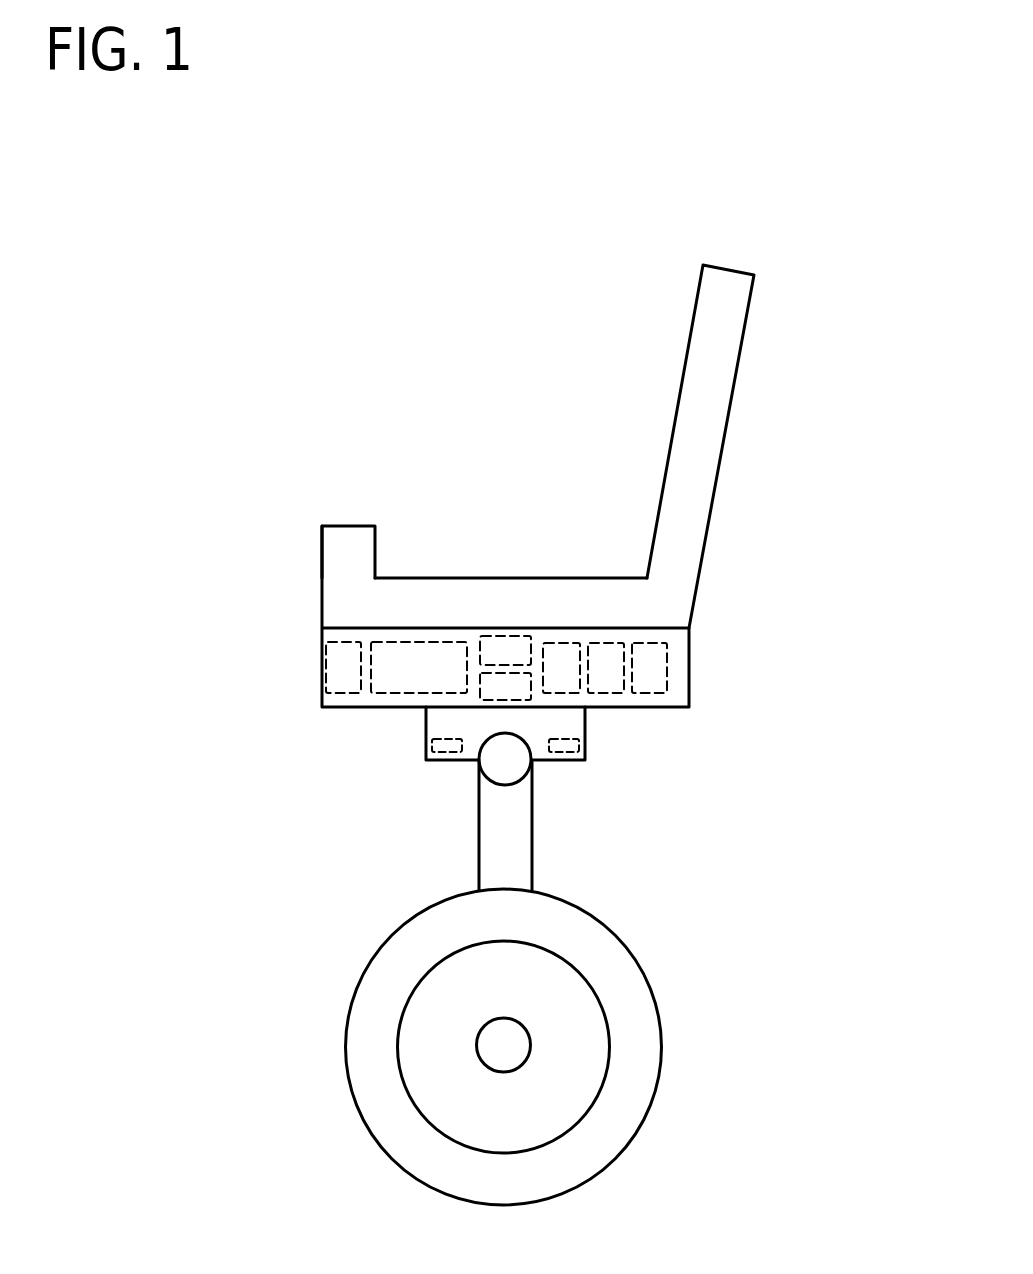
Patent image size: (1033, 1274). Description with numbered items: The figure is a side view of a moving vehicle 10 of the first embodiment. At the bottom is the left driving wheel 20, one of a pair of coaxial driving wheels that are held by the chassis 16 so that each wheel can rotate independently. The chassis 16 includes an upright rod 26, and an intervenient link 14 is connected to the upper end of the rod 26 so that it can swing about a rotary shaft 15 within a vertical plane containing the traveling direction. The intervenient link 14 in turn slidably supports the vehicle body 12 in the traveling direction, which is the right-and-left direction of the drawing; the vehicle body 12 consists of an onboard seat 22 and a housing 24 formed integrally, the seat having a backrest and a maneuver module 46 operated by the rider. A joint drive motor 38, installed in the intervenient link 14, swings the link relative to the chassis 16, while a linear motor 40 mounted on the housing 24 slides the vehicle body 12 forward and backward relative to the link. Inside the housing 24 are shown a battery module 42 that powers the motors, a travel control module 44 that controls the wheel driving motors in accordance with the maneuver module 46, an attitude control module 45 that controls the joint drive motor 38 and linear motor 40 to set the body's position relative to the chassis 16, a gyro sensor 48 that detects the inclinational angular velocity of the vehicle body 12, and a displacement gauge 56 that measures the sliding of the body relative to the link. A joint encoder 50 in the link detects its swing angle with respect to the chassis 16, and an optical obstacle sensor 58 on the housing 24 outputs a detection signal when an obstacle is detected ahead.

The moving vehicle 10 is at (523, 163).
The vehicle body 12 is at (773, 562).
The intervenient link 14 is at (585, 746).
The rotary shaft 15 is at (505, 759).
The chassis 16 is at (548, 863).
The left driving wheel 20 is at (662, 1043).
The onboard seat 22 is at (725, 453).
The housing 24 is at (689, 688).
The rod 26 is at (478, 866).
The joint drive motor 38 is at (564, 753).
The linear motor 40 is at (493, 700).
The battery module 42 is at (453, 633).
The travel control module 44 is at (607, 642).
The attitude control module 45 is at (667, 653).
The maneuver module 46 is at (348, 526).
The gyro sensor 48 is at (502, 635).
The joint encoder 50 is at (447, 753).
The displacement gauge 56 is at (557, 642).
The optical obstacle sensor 58 is at (318, 667).